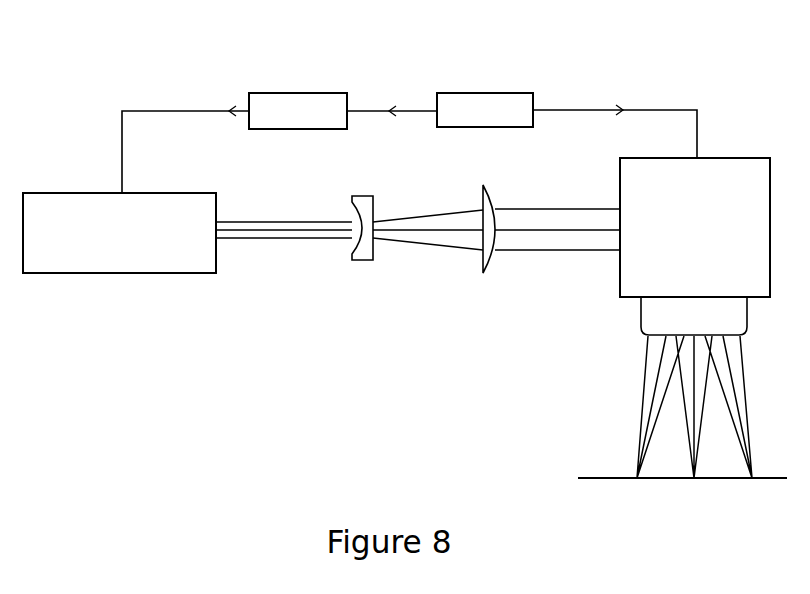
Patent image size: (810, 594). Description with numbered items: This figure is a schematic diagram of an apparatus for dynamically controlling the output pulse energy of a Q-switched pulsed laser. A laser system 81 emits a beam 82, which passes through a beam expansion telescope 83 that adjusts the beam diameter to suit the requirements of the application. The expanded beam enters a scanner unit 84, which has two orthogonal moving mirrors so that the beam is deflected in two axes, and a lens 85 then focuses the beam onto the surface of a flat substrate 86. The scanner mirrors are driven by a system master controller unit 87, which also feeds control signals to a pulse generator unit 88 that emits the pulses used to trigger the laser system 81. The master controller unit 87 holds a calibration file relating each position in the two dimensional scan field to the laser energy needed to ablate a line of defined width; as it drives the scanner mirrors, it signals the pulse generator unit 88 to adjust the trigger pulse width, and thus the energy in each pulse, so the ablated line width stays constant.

The laser system 81 is at (113, 280).
The beam 82 is at (260, 249).
The beam expansion telescope 83 is at (478, 278).
The scanner unit 84 is at (616, 292).
The lens 85 is at (675, 320).
The flat substrate 86 is at (622, 476).
The system master controller unit 87 is at (501, 91).
The pulse generator unit 88 is at (263, 92).